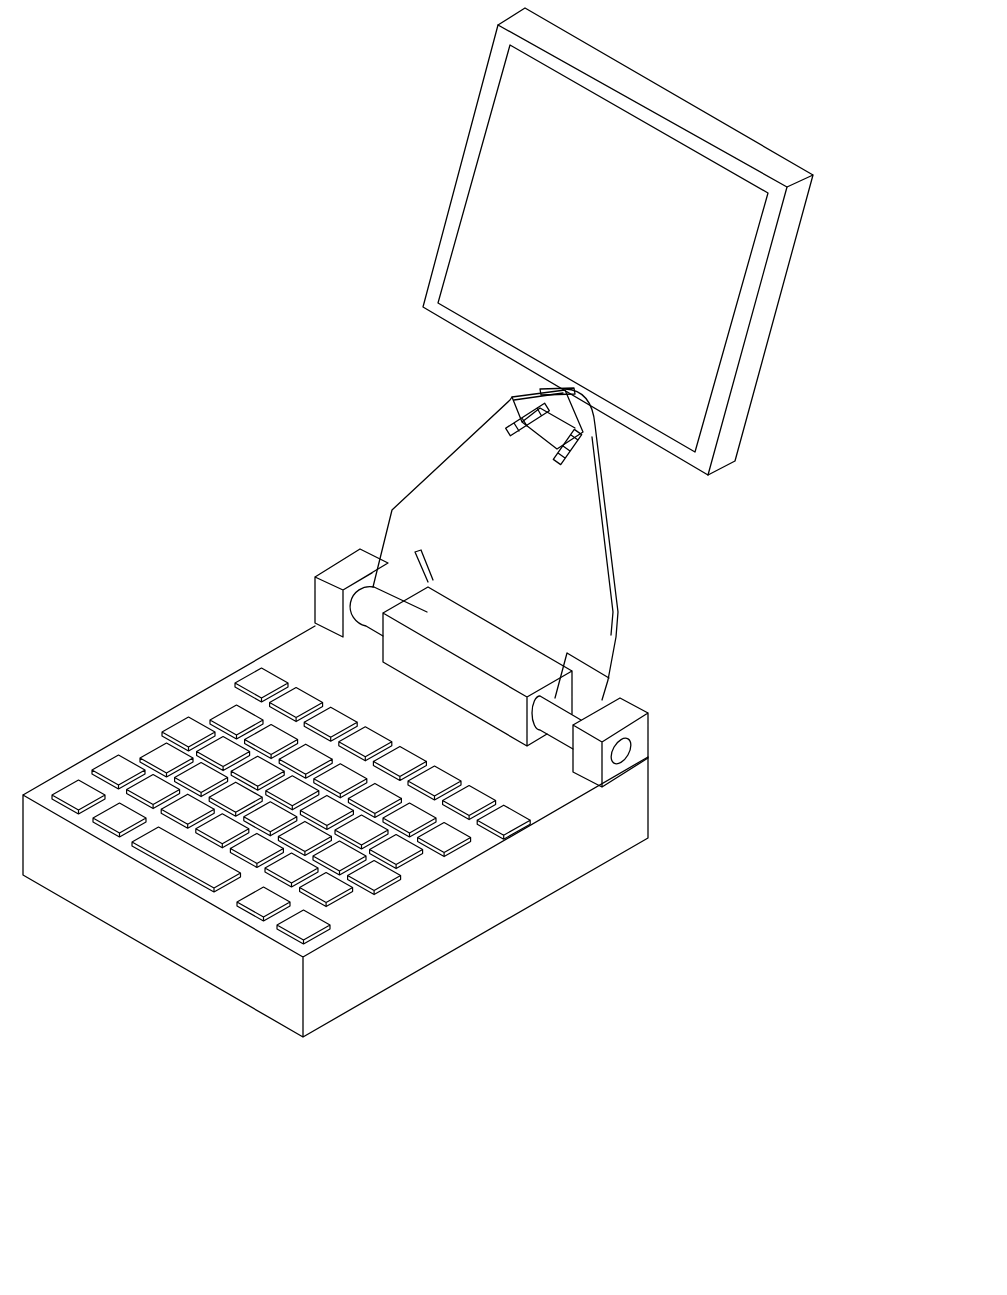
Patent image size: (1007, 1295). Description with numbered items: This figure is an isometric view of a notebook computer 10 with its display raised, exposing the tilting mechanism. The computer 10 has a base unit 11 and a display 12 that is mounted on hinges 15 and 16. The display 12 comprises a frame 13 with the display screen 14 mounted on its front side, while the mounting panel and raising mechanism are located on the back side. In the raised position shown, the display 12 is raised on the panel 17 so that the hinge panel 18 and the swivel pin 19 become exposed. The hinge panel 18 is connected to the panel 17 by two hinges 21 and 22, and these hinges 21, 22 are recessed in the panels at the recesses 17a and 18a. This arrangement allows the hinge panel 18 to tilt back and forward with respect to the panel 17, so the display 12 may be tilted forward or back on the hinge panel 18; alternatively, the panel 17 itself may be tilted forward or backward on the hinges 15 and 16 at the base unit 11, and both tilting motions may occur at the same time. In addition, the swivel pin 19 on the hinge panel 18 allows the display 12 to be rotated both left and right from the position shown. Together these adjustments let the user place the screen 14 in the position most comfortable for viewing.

The computer 10 is at (124, 1057).
The base unit 11 is at (528, 907).
The display 12 is at (458, 148).
The frame 13 is at (795, 240).
The display screen 14 is at (562, 147).
The hinge 15 is at (402, 573).
The hinge 16 is at (590, 690).
The panel 17 is at (555, 550).
The recess in panel 17a is at (550, 457).
The hinge panel 18 is at (578, 427).
The recess in hinge panel 18a is at (527, 393).
The swivel pin 19 is at (543, 393).
The hinge 21 is at (515, 412).
The hinge 22 is at (568, 450).